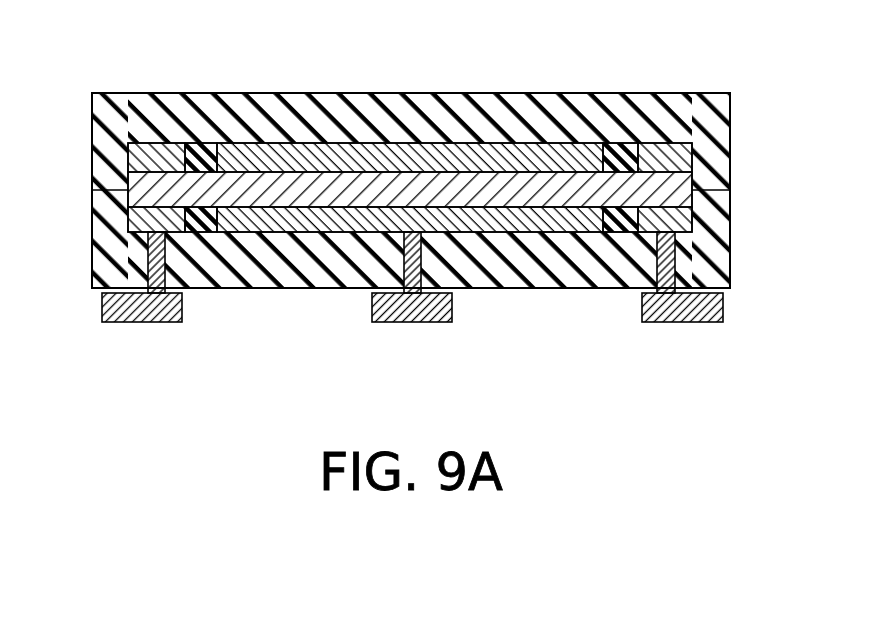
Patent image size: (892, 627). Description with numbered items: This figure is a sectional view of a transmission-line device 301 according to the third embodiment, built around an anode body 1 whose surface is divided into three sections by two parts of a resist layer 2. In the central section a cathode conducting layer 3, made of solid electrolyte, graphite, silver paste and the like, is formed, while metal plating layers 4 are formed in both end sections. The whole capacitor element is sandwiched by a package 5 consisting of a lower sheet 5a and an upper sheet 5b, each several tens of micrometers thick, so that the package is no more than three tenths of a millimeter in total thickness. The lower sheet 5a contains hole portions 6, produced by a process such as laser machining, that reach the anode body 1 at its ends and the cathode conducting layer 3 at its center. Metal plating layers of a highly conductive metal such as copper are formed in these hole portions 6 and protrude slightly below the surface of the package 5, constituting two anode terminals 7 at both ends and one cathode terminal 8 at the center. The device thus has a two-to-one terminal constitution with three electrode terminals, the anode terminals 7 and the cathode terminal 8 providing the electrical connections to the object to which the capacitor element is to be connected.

The transmission-line device 301 is at (411, 69).
The anode body 1 is at (262, 190).
The resist layer 2 is at (195, 150).
The cathode conducting layer 3 is at (482, 150).
The metal plating layers 4 is at (167, 147).
The package 5 is at (723, 160).
The lower sheet 5a is at (715, 253).
The upper sheet 5b is at (693, 120).
The hole portions 6 is at (146, 263).
The anode terminal 7 is at (148, 323).
The cathode terminal 8 is at (407, 313).